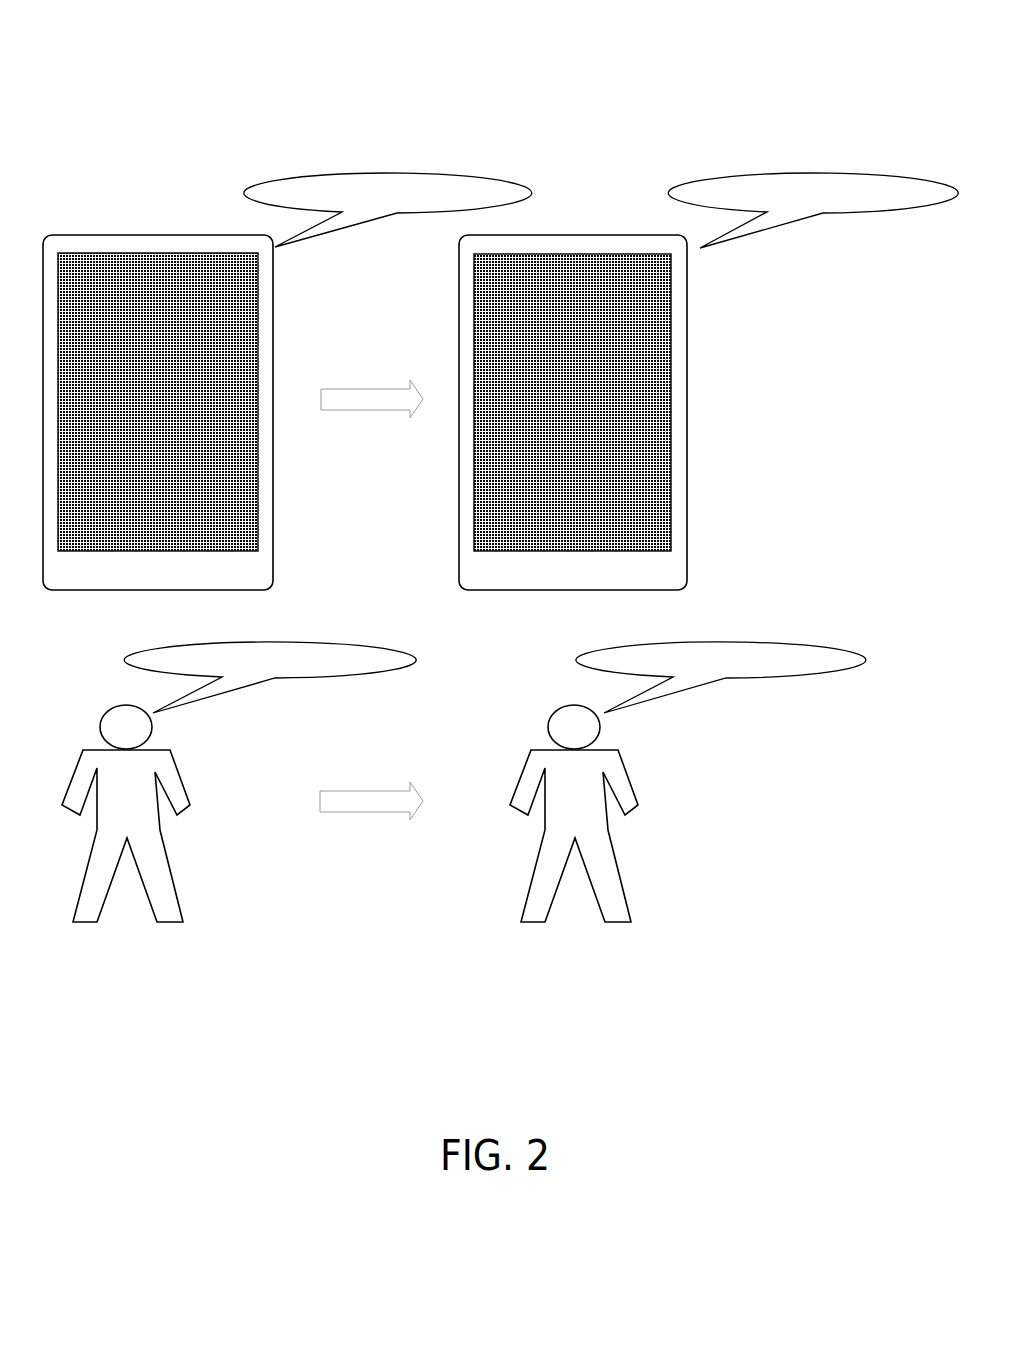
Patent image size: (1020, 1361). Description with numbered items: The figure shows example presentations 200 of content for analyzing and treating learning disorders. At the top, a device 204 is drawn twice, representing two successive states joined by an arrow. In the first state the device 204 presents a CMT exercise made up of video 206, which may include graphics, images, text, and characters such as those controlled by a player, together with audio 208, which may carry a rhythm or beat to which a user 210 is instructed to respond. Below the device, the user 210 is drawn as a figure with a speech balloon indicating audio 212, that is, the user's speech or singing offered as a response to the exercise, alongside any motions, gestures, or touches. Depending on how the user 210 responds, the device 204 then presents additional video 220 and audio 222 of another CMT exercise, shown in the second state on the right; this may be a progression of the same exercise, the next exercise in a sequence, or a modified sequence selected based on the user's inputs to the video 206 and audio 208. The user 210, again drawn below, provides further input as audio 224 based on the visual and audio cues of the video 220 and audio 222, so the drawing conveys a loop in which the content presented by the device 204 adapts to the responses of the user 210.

The example presentations 200 is at (799, 36).
The device 204 is at (158, 235).
The video 206 is at (257, 551).
The audio 208 is at (388, 173).
The user 210 is at (181, 770).
The audio 212 is at (337, 642).
The video 220 is at (671, 551).
The audio 222 is at (813, 173).
The audio 224 is at (782, 642).